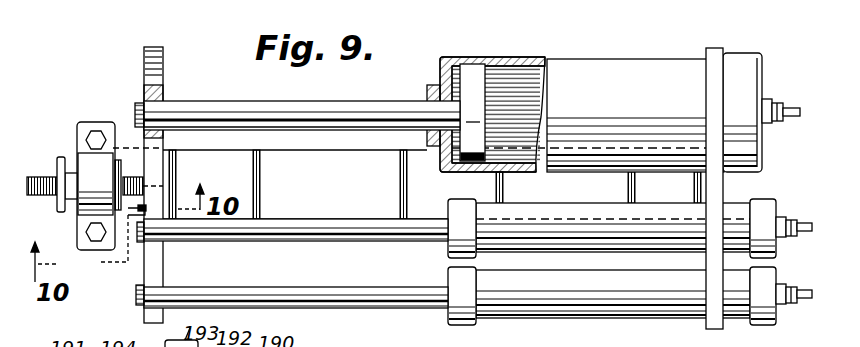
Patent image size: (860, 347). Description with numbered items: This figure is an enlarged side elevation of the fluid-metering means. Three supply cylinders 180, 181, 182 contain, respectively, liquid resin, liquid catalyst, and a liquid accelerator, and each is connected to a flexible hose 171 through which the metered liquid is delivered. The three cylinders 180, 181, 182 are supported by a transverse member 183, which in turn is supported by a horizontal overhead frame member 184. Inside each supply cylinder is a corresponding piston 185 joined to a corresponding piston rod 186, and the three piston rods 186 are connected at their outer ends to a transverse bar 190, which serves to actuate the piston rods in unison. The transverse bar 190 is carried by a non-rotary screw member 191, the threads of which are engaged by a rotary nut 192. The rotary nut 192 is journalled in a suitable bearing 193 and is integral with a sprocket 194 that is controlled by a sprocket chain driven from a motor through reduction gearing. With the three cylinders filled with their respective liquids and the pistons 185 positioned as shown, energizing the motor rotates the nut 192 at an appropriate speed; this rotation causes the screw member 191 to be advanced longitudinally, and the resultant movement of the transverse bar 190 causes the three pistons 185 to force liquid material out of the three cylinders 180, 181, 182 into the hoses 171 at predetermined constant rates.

The flexible hose 171 is at (796, 113).
The supply cylinder 180 is at (630, 60).
The supply cylinder 181 is at (550, 247).
The supply cylinder 182 is at (566, 318).
The transverse member 183 is at (721, 48).
The horizontal overhead frame member 184 is at (318, 150).
The piston 185 is at (485, 133).
The piston rod 186 is at (322, 106).
The transverse bar 190 is at (160, 262).
The non-rotary screw member 191 is at (37, 197).
The rotary nut 192 is at (132, 187).
The bearing 193 is at (78, 213).
The sprocket 194 is at (60, 158).